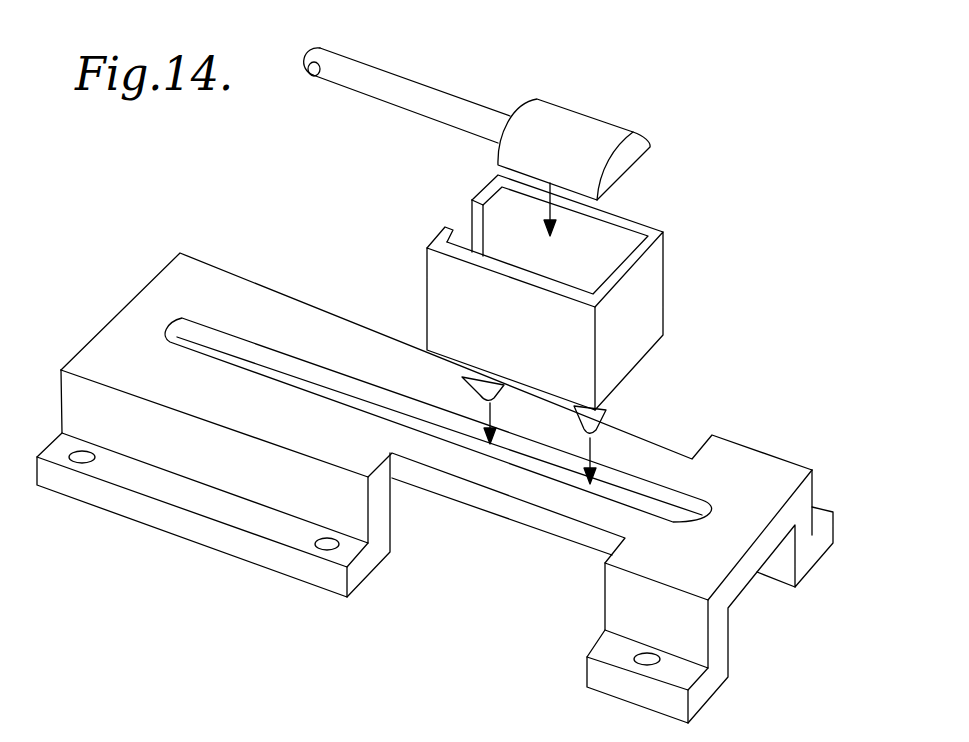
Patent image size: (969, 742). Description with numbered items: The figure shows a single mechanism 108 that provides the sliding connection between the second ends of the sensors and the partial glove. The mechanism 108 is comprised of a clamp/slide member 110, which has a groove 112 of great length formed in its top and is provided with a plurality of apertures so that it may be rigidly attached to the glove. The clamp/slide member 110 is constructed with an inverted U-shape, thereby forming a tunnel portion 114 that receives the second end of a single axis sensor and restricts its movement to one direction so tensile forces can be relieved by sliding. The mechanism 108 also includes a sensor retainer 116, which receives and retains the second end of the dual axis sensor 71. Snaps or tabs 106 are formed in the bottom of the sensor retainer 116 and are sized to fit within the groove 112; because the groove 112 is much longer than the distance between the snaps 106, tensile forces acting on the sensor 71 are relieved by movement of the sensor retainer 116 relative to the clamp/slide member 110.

The dual axis sensor 71 is at (577, 135).
The snaps or tabs 106 is at (497, 382).
The mechanism 108 is at (444, 660).
The clamp/slide member 110 is at (263, 553).
The groove 112 is at (280, 372).
The tunnel portion 114 is at (762, 617).
The sensor retainer 116 is at (657, 305).